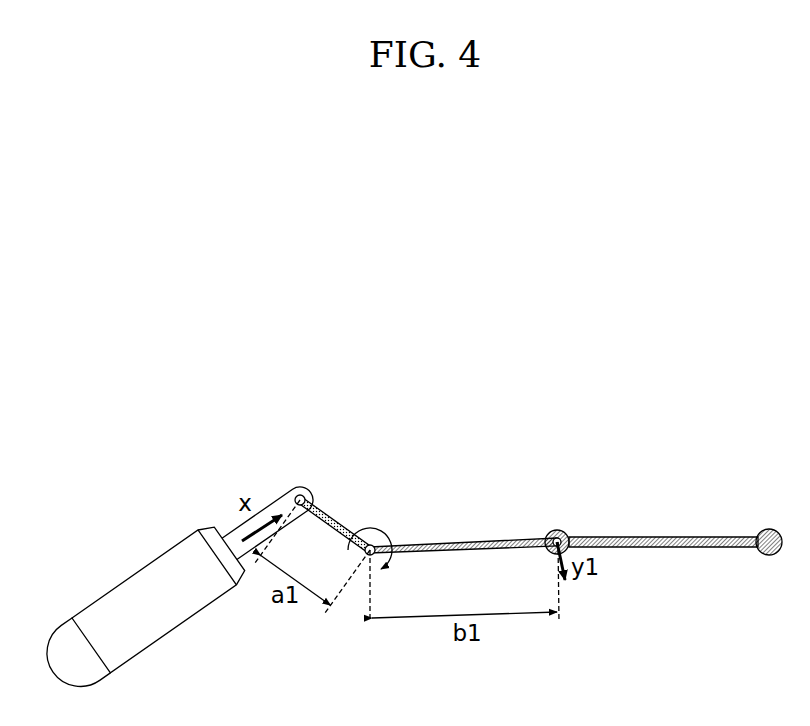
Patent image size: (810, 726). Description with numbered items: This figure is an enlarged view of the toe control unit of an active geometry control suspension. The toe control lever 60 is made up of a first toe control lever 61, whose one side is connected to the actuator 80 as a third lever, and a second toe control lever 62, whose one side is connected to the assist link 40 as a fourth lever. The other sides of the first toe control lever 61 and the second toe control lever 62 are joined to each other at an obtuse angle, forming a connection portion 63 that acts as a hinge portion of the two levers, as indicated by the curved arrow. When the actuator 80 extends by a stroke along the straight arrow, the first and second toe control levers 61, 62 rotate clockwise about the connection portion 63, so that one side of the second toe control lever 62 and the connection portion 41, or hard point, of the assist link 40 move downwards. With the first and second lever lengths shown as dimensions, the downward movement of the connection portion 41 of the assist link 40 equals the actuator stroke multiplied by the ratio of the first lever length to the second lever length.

The actuator 80 is at (135, 575).
The toe control lever 60 is at (426, 488).
The first toe control lever 61 is at (323, 511).
The second toe control lever 62 is at (433, 543).
The connection portion 63 is at (369, 527).
The connection portion 41 is at (558, 530).
The assist link 40 is at (677, 537).